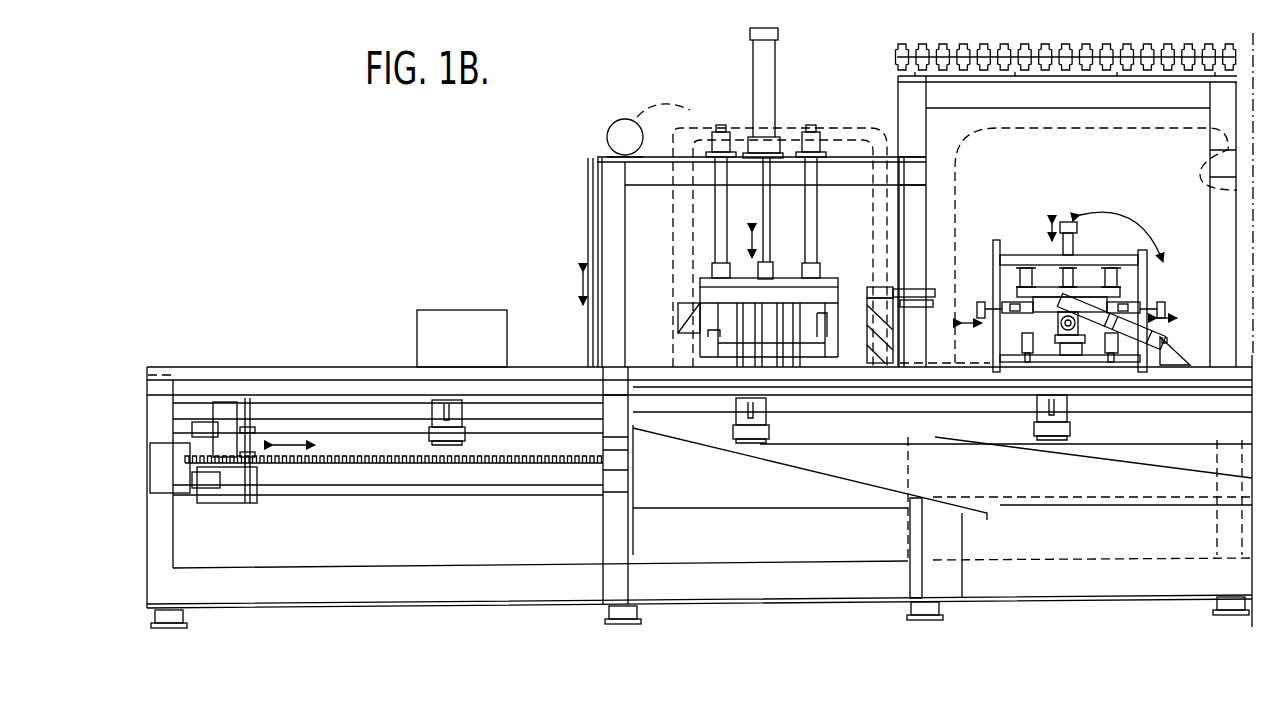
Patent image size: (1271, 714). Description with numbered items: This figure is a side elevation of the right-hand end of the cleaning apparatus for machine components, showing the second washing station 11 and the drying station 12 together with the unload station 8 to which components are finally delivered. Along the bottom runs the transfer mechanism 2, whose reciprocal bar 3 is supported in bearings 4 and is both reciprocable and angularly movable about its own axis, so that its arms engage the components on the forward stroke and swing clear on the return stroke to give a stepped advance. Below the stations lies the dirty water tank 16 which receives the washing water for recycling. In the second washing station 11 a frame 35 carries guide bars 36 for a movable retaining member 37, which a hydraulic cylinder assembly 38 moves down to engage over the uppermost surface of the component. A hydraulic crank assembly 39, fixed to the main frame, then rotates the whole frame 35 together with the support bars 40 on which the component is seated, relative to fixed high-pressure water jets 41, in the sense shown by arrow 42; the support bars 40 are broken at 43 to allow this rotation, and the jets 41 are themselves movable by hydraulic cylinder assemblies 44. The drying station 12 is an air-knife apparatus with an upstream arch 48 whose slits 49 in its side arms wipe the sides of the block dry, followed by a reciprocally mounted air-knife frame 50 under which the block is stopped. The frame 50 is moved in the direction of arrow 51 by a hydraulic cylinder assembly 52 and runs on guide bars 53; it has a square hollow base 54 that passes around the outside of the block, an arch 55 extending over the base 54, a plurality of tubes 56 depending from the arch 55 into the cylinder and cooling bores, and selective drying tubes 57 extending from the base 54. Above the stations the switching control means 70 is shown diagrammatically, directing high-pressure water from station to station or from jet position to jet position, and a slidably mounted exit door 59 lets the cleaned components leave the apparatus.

The transfer mechanism 2 is at (287, 405).
The reciprocal bar 3 is at (345, 413).
The bearings 4 is at (740, 422).
The unload station 8 is at (550, 293).
The second washing station 11 is at (1067, 221).
The drying station 12 is at (761, 221).
The dirty water tank 16 is at (700, 330).
The frame 35 is at (1147, 278).
The guide bars 36 is at (1117, 277).
The movable retaining member 37 is at (1053, 290).
The hydraulic cylinder assembly 38 is at (1074, 245).
The hydraulic crank assembly 39 is at (1100, 337).
The support bars 40 is at (985, 363).
The high-pressure water jets 41 is at (985, 298).
The arrow 42 is at (1133, 237).
The break in support bars 43 is at (1170, 365).
The hydraulic cylinder assemblies 44 is at (975, 310).
The upstream arch 48 is at (900, 288).
The slits 49 is at (900, 333).
The air-knife frame 50 is at (828, 288).
The arrow 51 is at (737, 201).
The hydraulic cylinder assembly 52 is at (777, 82).
The guide bars 53 is at (817, 218).
The square hollow base 54 is at (836, 352).
The arch 55 is at (845, 312).
The tubes 56 is at (737, 348).
The selective drying tubes 57 is at (718, 328).
The exit door 59 is at (590, 322).
The switching control means 70 is at (972, 40).